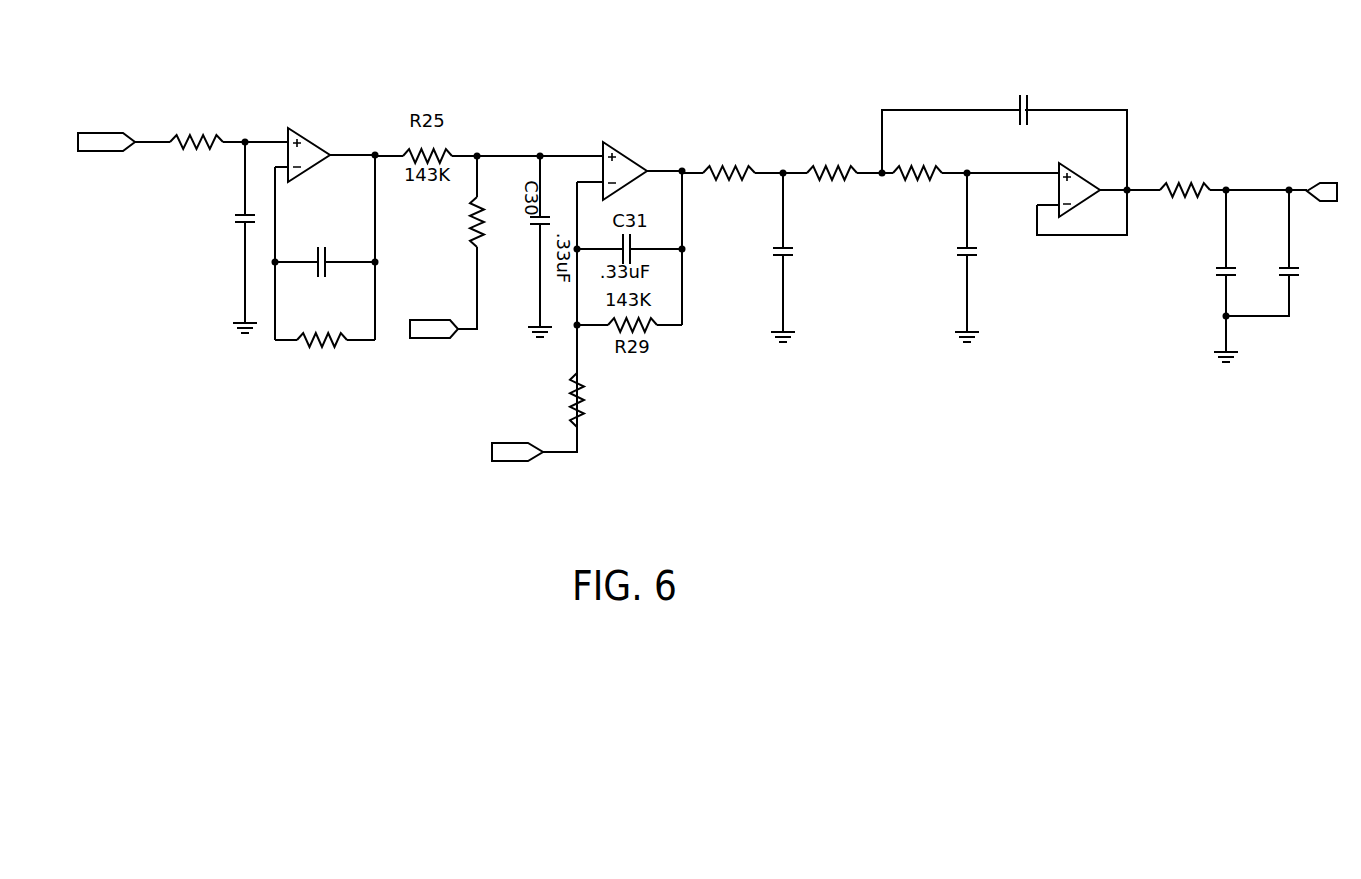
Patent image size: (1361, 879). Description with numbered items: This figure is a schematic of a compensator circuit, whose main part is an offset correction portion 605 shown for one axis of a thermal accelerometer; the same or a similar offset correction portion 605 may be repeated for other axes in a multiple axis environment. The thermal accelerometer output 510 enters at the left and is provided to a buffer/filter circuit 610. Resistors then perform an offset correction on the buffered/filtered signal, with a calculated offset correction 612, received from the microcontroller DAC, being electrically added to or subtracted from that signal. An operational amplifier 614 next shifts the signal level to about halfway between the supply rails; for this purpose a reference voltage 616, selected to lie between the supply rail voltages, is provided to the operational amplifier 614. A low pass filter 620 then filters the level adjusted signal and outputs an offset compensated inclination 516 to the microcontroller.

The thermal accelerometer output 510 is at (115, 175).
The offset compensated inclination 516 is at (1334, 186).
The offset correction portion 605 is at (153, 442).
The buffer/filter circuit 610 is at (301, 213).
The calculated offset correction 612 is at (425, 334).
The operational amplifier 614 is at (615, 145).
The reference voltage 616 is at (492, 450).
The low pass filter 620 is at (994, 201).